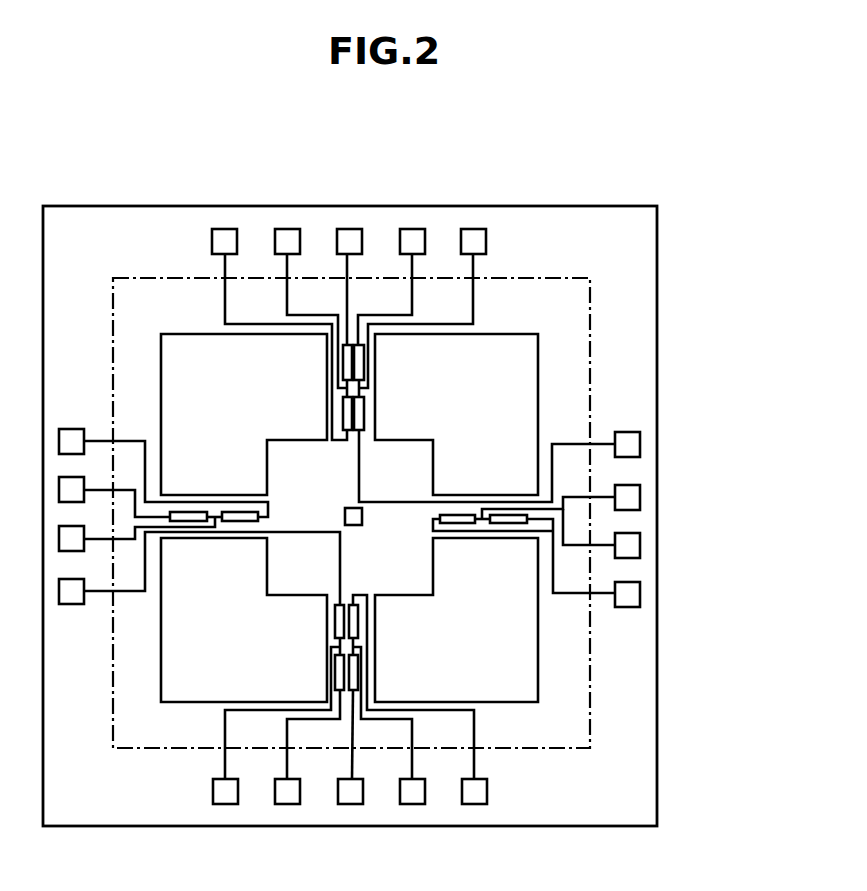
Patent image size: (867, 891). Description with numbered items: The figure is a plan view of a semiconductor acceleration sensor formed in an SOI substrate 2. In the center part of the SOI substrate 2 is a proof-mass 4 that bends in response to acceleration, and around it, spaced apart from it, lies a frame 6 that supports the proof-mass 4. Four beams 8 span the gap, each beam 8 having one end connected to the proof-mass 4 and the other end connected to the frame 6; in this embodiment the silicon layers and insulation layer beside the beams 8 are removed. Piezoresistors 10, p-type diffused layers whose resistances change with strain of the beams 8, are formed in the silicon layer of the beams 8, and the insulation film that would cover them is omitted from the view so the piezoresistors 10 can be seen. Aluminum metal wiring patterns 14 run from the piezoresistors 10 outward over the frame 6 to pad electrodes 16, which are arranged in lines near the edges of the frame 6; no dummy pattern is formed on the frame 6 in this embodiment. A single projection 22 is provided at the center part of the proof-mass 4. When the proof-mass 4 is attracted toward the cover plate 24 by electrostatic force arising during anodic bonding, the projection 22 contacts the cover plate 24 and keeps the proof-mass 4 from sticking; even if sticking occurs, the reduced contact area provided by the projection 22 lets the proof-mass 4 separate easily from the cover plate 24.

The SOI substrate 2 is at (391, 516).
The proof-mass 4 is at (398, 474).
The frame 6 is at (620, 293).
The beams 8 is at (378, 398).
The piezoresistors 10 is at (461, 487).
The metal wiring patterns 14 is at (572, 596).
The pad electrodes 16 is at (625, 593).
The projection 22 is at (347, 510).
The cover plate 24 is at (385, 277).